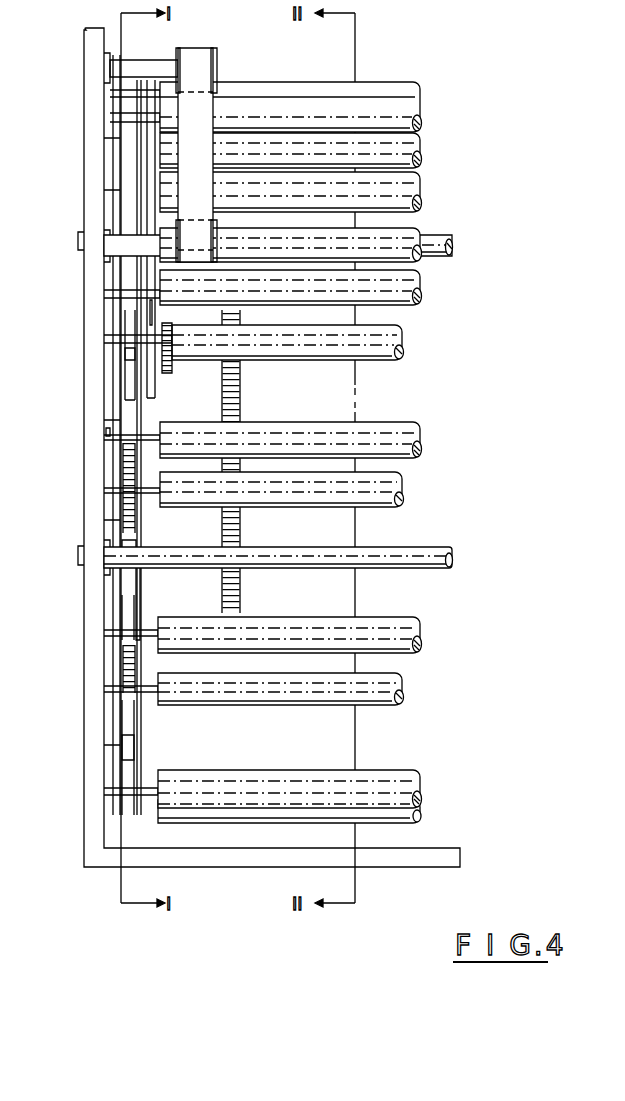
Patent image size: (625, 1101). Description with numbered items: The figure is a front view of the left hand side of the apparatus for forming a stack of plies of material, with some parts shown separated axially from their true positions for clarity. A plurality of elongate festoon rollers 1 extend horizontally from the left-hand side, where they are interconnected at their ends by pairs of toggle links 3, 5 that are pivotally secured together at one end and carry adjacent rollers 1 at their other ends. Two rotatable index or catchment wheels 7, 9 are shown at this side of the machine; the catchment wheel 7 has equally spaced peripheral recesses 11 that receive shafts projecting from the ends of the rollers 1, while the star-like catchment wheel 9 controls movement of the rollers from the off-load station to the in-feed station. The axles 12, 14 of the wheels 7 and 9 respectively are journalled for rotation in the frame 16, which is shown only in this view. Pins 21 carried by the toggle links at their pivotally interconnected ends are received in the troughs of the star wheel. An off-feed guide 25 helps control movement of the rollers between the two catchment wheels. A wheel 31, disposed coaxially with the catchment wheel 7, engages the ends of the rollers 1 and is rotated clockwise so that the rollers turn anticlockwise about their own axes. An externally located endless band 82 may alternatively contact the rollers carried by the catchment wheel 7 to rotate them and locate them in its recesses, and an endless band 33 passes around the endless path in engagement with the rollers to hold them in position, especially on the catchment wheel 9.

The festoon roller 1 is at (415, 110).
The toggle link 3 is at (130, 510).
The toggle link 5 is at (140, 595).
The catchment wheel 7 is at (150, 312).
The catchment wheel 9 is at (128, 748).
The peripheral recess 11 is at (143, 383).
The axle 12 is at (440, 241).
The axle 14 is at (450, 557).
The frame 16 is at (90, 168).
The pin 21 is at (128, 356).
The off-feed guide 25 is at (105, 430).
The wheel 31 is at (167, 374).
The endless band 33 is at (125, 660).
The endless band 82 is at (208, 77).